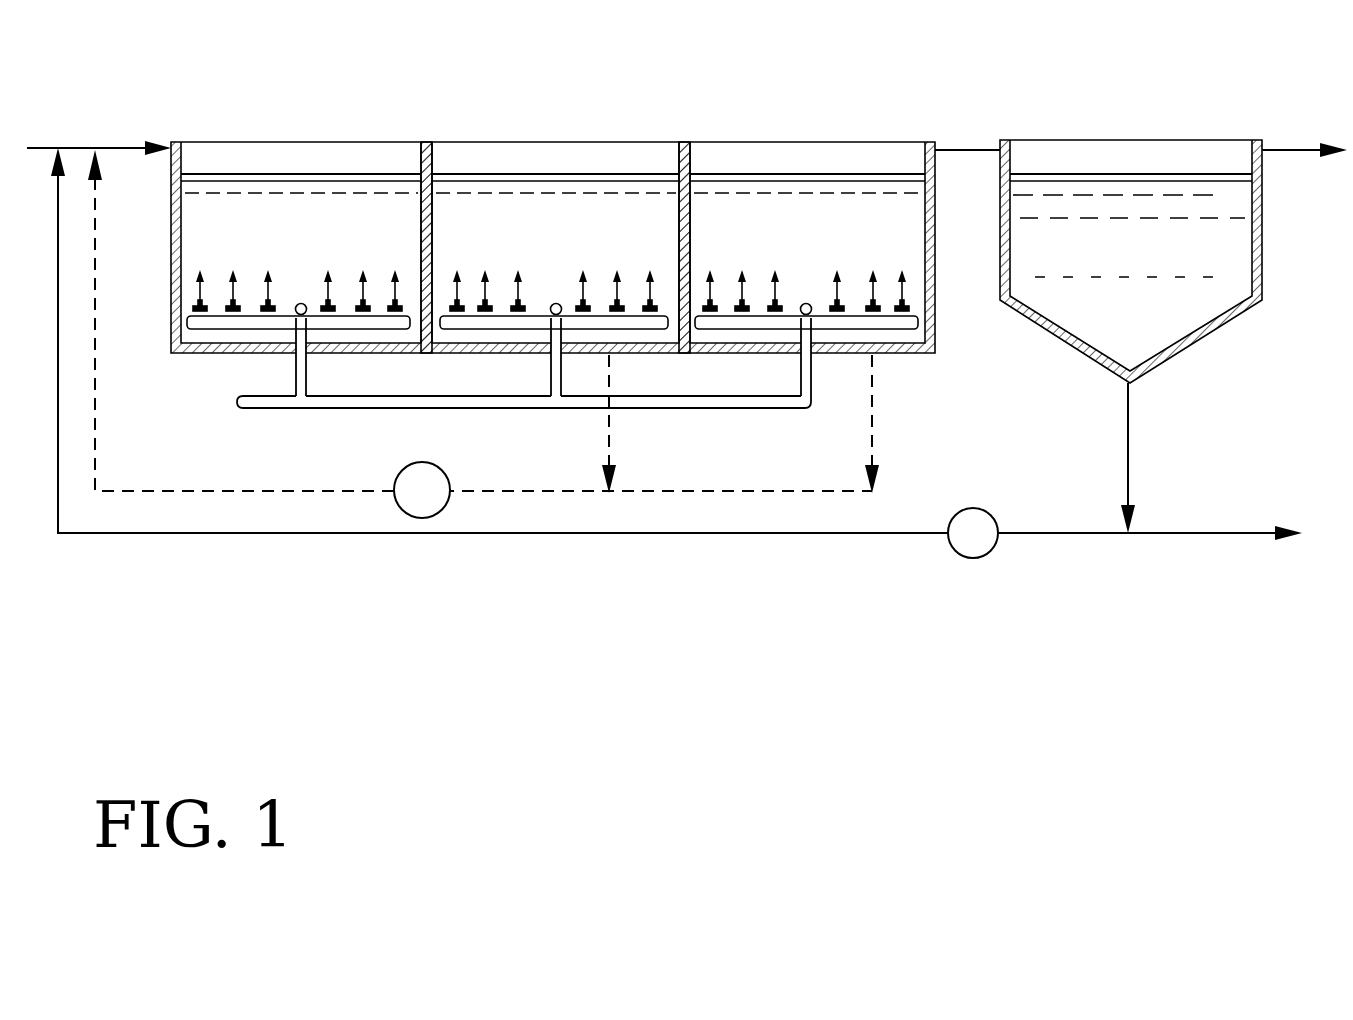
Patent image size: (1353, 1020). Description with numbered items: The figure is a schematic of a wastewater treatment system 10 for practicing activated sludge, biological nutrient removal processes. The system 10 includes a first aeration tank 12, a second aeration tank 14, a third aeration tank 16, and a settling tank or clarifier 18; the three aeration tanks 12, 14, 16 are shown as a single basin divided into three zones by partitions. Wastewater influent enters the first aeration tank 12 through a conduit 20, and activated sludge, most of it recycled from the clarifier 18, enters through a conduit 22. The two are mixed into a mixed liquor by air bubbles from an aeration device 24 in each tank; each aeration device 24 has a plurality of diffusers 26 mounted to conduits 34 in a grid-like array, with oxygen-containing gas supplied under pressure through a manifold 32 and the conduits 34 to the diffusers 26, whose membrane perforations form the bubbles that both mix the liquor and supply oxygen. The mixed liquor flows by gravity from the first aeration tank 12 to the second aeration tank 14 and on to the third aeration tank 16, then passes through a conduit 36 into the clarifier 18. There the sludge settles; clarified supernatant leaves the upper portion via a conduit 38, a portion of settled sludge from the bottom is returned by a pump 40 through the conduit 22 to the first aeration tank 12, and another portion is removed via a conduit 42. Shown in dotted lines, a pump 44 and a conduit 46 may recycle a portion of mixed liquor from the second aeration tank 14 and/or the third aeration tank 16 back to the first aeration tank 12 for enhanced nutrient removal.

The wastewater treatment system 10 is at (362, 566).
The first aeration tank 12 is at (362, 175).
The second aeration tank 14 is at (582, 175).
The third aeration tank 16 is at (836, 175).
The clarifier 18 is at (1262, 238).
The conduit 20 is at (100, 148).
The conduit 22 is at (203, 535).
The aeration device 24 is at (262, 330).
The diffusers 26 is at (270, 302).
The manifold 32 is at (301, 303).
The conduits 34 is at (395, 338).
The conduit 36 is at (965, 150).
The conduit 38 is at (1287, 150).
The pump 40 is at (985, 508).
The conduit 42 is at (1183, 530).
The pump 44 is at (450, 473).
The conduit 46 is at (108, 343).